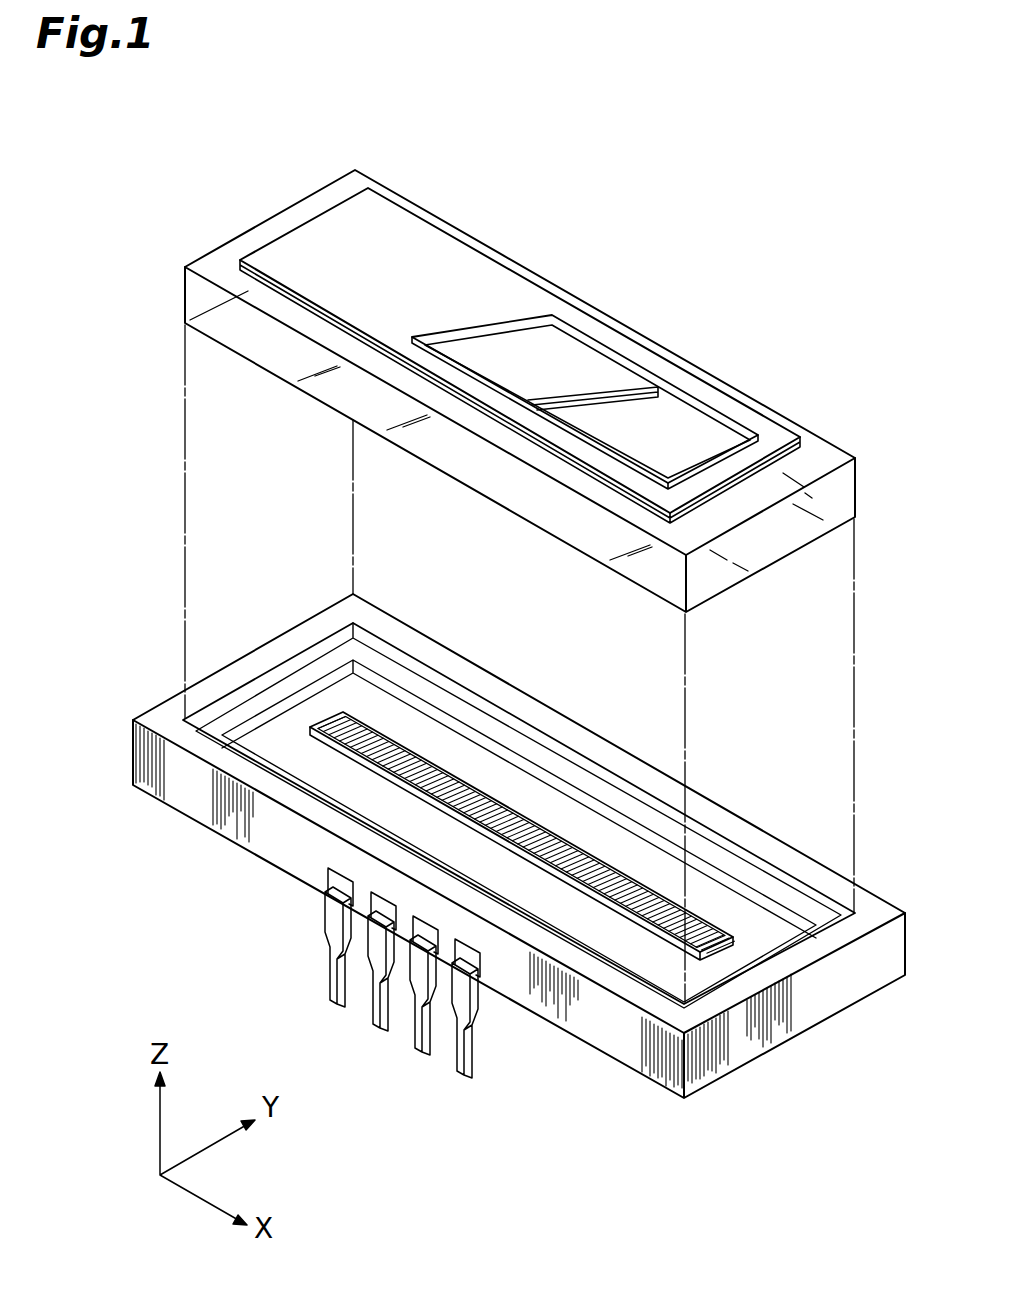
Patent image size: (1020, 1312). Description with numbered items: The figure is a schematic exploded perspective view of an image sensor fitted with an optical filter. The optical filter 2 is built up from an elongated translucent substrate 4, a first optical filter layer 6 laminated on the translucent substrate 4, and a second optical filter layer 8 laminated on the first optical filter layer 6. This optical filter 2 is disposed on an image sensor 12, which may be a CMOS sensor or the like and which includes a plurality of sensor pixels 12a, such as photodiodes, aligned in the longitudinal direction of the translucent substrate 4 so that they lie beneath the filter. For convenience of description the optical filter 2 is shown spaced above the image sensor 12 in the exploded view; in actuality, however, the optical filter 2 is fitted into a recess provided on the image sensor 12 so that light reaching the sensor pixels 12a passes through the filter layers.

The optical filter 2 is at (812, 264).
The translucent substrate 4 is at (234, 238).
The first optical filter layer 6 is at (598, 370).
The second optical filter layer 8 is at (441, 258).
The image sensor 12 is at (178, 828).
The sensor pixels 12a is at (362, 757).